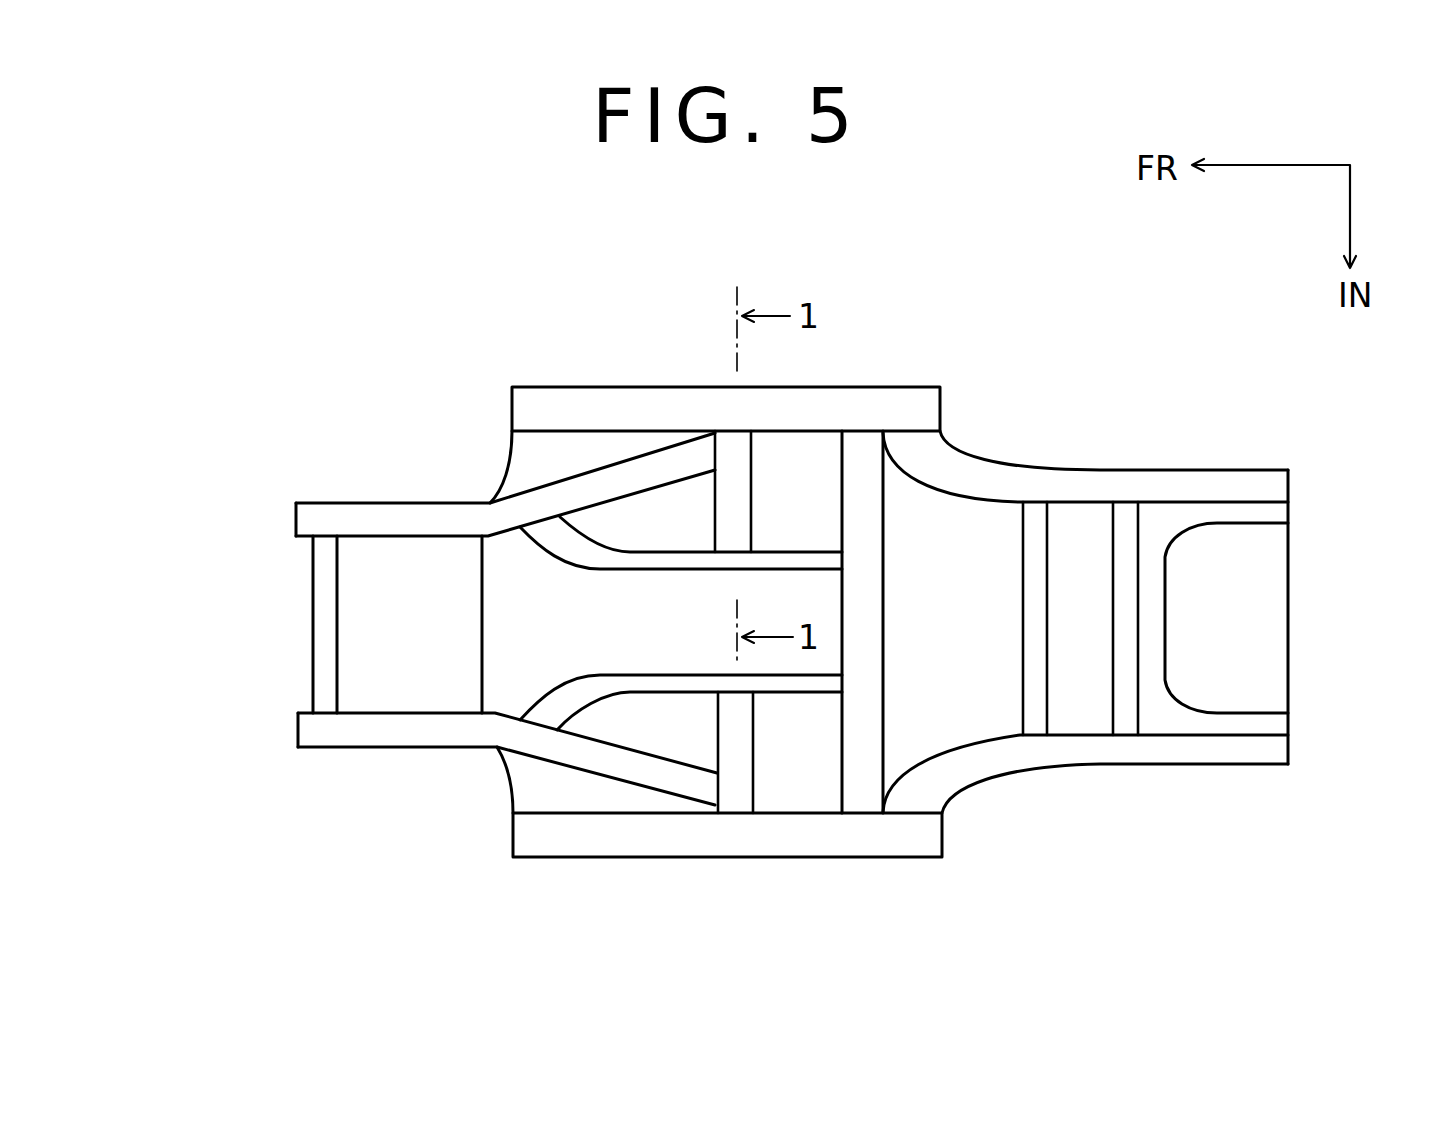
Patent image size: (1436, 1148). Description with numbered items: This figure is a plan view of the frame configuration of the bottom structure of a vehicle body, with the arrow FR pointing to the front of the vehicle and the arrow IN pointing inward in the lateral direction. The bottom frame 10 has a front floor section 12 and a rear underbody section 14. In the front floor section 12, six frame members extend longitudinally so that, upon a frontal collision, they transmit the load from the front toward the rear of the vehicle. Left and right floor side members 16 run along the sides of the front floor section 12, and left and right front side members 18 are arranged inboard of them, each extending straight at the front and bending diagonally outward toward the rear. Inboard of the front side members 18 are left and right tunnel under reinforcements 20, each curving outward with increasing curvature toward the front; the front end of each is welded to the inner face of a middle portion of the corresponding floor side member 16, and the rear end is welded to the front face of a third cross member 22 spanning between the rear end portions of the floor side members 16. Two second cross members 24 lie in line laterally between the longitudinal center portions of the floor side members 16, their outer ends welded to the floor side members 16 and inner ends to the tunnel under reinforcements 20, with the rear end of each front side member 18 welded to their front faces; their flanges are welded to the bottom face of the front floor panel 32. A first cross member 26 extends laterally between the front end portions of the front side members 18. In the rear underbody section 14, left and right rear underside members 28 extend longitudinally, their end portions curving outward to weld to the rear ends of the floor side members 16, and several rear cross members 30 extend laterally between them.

The bottom frame 10 is at (993, 321).
The front floor section 12 is at (459, 441).
The rear underbody section 14 is at (1202, 450).
The floor side member 16 is at (888, 400).
The front side member 18 is at (352, 512).
The tunnel under reinforcement 20 is at (570, 542).
The third cross member 22 is at (868, 792).
The second cross member 24 is at (725, 458).
The first cross member 26 is at (313, 652).
The rear underside member 28 is at (1110, 485).
The rear cross member 30 is at (1035, 732).
The front floor panel 32 is at (535, 783).